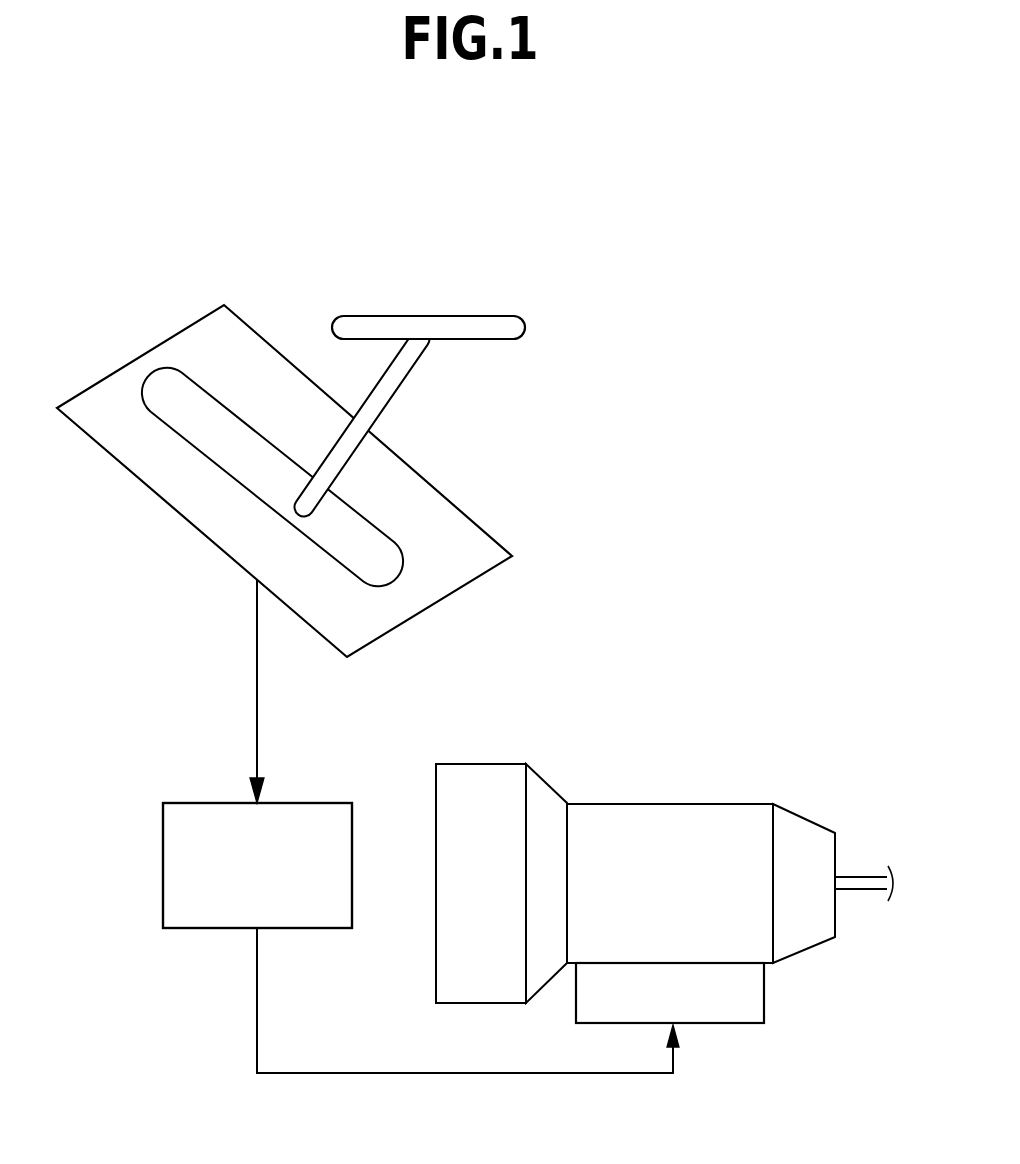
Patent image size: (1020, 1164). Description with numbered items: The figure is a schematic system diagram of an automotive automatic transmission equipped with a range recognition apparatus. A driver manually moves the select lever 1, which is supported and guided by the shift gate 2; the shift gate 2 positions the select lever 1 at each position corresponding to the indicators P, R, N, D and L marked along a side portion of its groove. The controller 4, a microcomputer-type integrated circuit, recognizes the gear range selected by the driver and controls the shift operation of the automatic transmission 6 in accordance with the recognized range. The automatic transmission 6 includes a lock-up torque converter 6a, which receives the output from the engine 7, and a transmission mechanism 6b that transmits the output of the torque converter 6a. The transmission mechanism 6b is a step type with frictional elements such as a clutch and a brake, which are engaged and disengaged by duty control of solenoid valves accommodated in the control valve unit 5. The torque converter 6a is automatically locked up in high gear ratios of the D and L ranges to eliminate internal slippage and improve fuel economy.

The select lever 1 is at (412, 327).
The shift gate 2 is at (175, 392).
The controller 4 is at (310, 803).
The control valve unit 5 is at (717, 1005).
The automatic transmission 6 is at (709, 821).
The lock-up torque converter 6a is at (547, 798).
The transmission mechanism 6b is at (595, 691).
The engine 7 is at (483, 787).